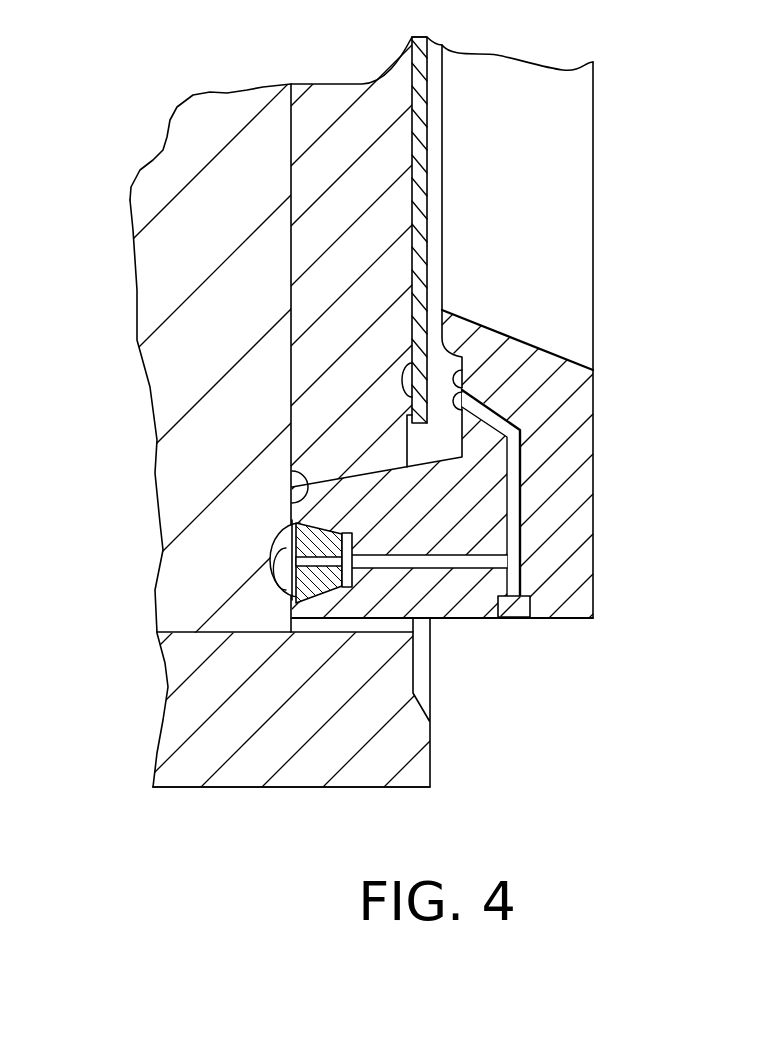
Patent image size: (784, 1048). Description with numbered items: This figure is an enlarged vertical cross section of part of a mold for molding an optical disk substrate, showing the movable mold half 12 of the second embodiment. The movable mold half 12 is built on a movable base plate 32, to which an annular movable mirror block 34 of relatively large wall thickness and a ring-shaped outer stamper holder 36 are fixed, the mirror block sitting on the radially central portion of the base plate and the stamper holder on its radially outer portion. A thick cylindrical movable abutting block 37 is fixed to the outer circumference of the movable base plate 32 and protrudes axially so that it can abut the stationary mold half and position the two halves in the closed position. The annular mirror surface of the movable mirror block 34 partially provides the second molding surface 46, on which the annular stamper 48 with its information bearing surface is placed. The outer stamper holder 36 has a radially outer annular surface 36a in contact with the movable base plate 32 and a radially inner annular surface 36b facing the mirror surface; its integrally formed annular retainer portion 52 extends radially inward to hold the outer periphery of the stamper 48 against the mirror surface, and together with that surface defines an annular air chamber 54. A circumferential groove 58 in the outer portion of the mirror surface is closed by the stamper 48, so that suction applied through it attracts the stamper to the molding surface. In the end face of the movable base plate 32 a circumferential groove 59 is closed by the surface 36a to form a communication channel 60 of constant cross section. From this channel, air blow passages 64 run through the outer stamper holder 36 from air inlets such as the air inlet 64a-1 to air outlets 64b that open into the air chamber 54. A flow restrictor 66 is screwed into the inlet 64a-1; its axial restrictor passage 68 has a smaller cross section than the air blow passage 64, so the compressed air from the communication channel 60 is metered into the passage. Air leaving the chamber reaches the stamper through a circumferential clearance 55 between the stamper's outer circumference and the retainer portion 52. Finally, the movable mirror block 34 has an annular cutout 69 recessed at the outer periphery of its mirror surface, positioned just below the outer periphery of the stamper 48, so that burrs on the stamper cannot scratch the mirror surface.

The movable mold half 12 is at (216, 816).
The movable base plate 32 is at (147, 257).
The movable mirror block 34 is at (352, 323).
The outer stamper holder 36 is at (596, 565).
The radially outer annular surface 36a is at (300, 479).
The radially inner annular surface 36b is at (463, 385).
The movable abutting block 37 is at (308, 770).
The second molding surface 46 is at (412, 150).
The stamper 48 is at (420, 183).
The annular retainer portion 52 is at (493, 340).
The annular air chamber 54 is at (432, 433).
The circumferential clearance 55 is at (440, 320).
The circumferential groove 58 is at (403, 392).
The circumferential groove 59 is at (272, 549).
The communication channel 60 is at (290, 588).
The air blow passage 64 is at (517, 475).
The air inlet 64a-1 is at (293, 600).
The air outlet 64b is at (463, 404).
The flow restrictor 66 is at (313, 585).
The restrictor passage 68 is at (307, 582).
The annular cutout 69 is at (410, 445).